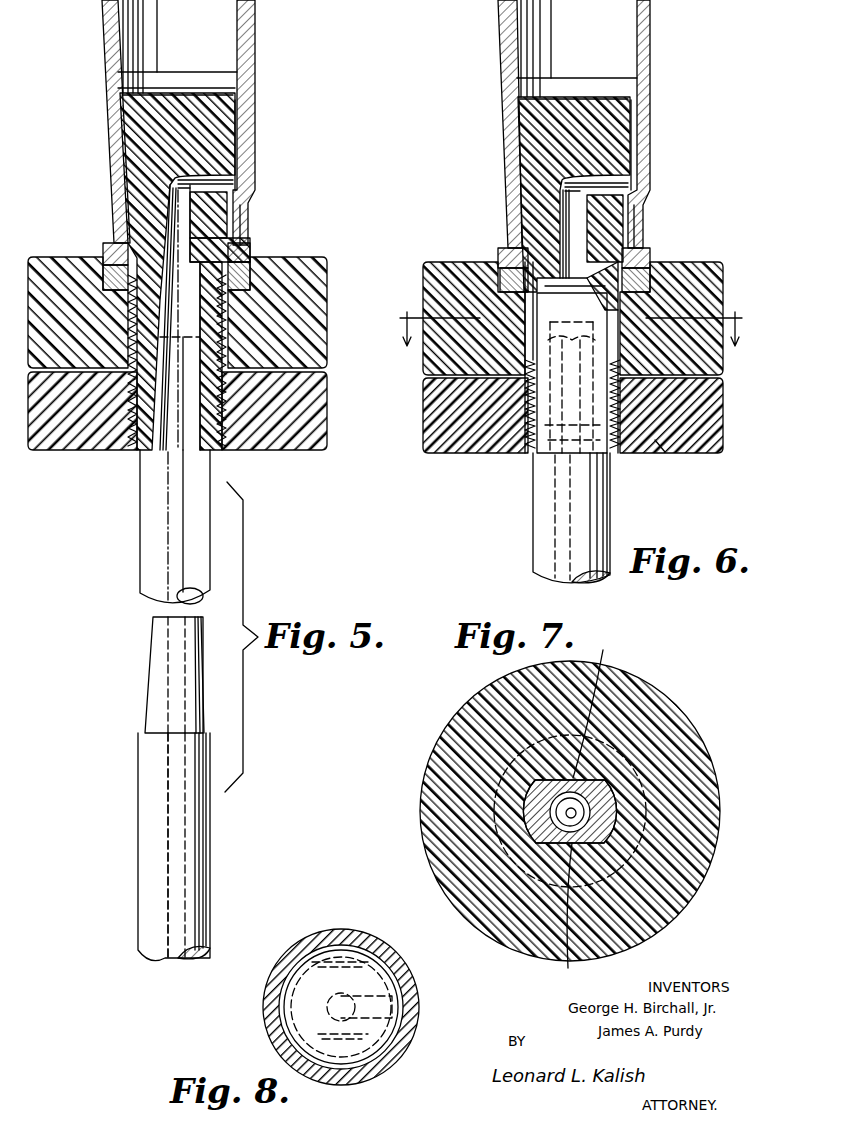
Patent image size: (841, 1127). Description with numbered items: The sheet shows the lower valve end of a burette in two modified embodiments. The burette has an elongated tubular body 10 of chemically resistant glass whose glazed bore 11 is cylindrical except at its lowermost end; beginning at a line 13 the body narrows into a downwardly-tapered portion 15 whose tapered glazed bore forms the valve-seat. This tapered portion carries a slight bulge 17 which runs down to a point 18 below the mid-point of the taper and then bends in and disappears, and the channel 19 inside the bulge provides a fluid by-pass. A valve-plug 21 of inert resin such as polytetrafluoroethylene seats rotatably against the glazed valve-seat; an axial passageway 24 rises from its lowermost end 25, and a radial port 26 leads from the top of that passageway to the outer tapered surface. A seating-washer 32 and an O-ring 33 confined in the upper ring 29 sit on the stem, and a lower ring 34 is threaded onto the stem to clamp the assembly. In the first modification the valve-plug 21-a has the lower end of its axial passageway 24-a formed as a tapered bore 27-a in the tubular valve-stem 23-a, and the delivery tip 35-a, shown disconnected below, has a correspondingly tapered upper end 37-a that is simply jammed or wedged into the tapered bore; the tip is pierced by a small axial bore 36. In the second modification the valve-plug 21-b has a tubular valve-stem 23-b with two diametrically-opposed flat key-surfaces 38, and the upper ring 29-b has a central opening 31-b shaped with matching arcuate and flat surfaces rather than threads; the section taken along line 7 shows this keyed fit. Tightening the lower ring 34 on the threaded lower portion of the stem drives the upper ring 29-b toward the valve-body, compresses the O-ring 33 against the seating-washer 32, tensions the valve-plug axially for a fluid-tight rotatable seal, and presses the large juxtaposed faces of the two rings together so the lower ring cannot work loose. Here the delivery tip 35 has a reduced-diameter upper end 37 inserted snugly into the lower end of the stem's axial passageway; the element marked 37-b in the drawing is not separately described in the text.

In FIG. 5, the tubular body 10 is at (255, 16).
In FIG. 6, the tubular body 10 is at (652, 15).
In FIG. 8, the tubular body 10 is at (366, 944).
In FIG. 8, the bore 11 is at (392, 962).
In FIG. 5, the line 13 is at (215, 72).
In FIG. 6, the line 13 is at (585, 78).
In FIG. 5, the downwardly-tapered portion 15 is at (98, 95).
In FIG. 5, the bulge 17 is at (250, 162).
In FIG. 6, the bulge 17 is at (648, 140).
In FIG. 5, the point 18 is at (248, 210).
In FIG. 6, the point 18 is at (650, 205).
In FIG. 5, the channel 19 is at (238, 150).
In FIG. 6, the channel 19 is at (632, 160).
In FIG. 8, the valve-plug 21 is at (318, 982).
In FIG. 5, the valve-plug 21-a is at (195, 97).
In FIG. 6, the valve-plug 21-b is at (612, 124).
In FIG. 5, the tubular valve-stem 23-a is at (140, 452).
In FIG. 6, the tubular valve-stem 23-b is at (528, 340).
In FIG. 7, the tubular valve-stem 23-b is at (613, 787).
In FIG. 6, the axial passageway 24 is at (600, 224).
In FIG. 5, the axial passageway 24-a is at (192, 240).
In FIG. 6, the lowermost end 25 is at (530, 455).
In FIG. 5, the radial port 26 is at (220, 183).
In FIG. 6, the radial port 26 is at (615, 190).
In FIG. 5, the tapered bore 27-a is at (203, 452).
In FIG. 5, the ring 29 is at (312, 285).
In FIG. 6, the upper ring 29-b is at (700, 288).
In FIG. 7, the upper ring 29-b is at (650, 685).
In FIG. 7, the central opening 31-b is at (527, 790).
In FIG. 5, the seating-washer 32 is at (108, 243).
In FIG. 6, the seating-washer 32 is at (503, 250).
In FIG. 5, the O-ring 33 is at (108, 268).
In FIG. 6, the O-ring 33 is at (500, 275).
In FIG. 5, the lower ring 34 is at (312, 411).
In FIG. 6, the lower ring 34 is at (690, 414).
In FIG. 5, the delivery tip 35 is at (175, 527).
In FIG. 6, the delivery tip 35 is at (612, 498).
In FIG. 5, the delivery tip 35-a is at (140, 815).
In FIG. 5, the axial bore 36 is at (170, 783).
In FIG. 7, the axial bore 36 is at (585, 815).
In FIG. 7, the reduced-diameter upper end 37 is at (590, 830).
In FIG. 5, the tapered upper end 37-a is at (150, 668).
In FIG. 6, the tapered pin 37-b is at (660, 450).
In FIG. 6, the key-surfaces 38 is at (600, 330).
In FIG. 7, the key-surfaces 38 is at (593, 803).
In FIG. 6, the section line 7— 7 is at (570, 317).